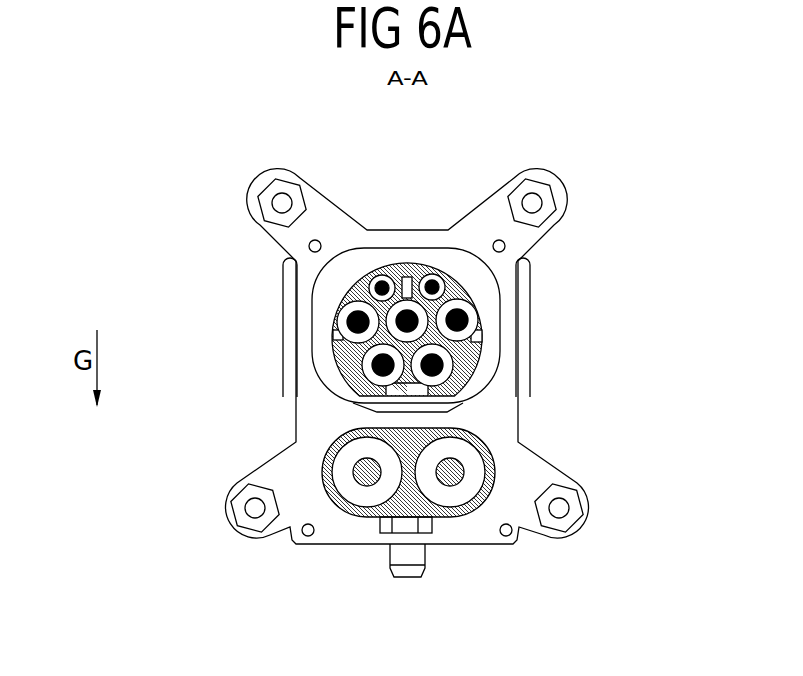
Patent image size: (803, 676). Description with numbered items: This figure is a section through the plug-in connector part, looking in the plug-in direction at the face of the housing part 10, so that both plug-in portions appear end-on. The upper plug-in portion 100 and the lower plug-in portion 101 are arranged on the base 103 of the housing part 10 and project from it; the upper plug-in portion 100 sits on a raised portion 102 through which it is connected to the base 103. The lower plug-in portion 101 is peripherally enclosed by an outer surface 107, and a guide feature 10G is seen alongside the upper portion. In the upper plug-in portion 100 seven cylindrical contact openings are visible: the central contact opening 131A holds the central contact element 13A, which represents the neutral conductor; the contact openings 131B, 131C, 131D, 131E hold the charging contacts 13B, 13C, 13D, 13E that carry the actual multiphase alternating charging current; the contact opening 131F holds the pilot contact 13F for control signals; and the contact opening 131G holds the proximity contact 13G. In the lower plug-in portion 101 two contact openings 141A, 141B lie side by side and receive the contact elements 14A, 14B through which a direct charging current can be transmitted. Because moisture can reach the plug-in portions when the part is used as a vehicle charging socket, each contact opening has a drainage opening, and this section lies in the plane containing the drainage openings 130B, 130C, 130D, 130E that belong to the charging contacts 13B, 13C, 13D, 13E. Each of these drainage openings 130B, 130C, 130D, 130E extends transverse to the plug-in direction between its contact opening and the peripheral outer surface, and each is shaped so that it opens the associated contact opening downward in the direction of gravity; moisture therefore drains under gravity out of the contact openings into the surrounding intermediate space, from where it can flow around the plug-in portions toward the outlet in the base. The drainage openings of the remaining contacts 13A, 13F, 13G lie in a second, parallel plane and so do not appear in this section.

The housing part 10 is at (582, 184).
The upper plug-in portion 100 is at (482, 287).
The lower plug-in portion 101 is at (448, 518).
The raised portion 102 is at (337, 275).
The base 103 is at (292, 522).
The outer surface 107 is at (495, 480).
The guide rail 10G is at (284, 305).
The central contact element 13A is at (408, 318).
The contact opening 131A is at (408, 300).
The contact element 13B is at (356, 323).
The contact opening 131B is at (355, 307).
The drainage opening 130B is at (345, 343).
The contact element 13C is at (382, 366).
The contact opening 131C is at (371, 358).
The drainage opening 130C is at (372, 383).
The contact element 13D is at (434, 366).
The contact opening 131D is at (452, 357).
The drainage opening 130D is at (440, 384).
The contact element 13E is at (458, 321).
The contact opening 131E is at (477, 307).
The drainage opening 130E is at (472, 343).
The contact element 13F is at (433, 287).
The contact opening 131F is at (441, 276).
The contact element 13G is at (383, 286).
The contact opening 131G is at (376, 276).
The contact element 14A is at (365, 480).
The contact opening 141A is at (375, 497).
The contact element 14B is at (452, 471).
The contact opening 141B is at (465, 488).